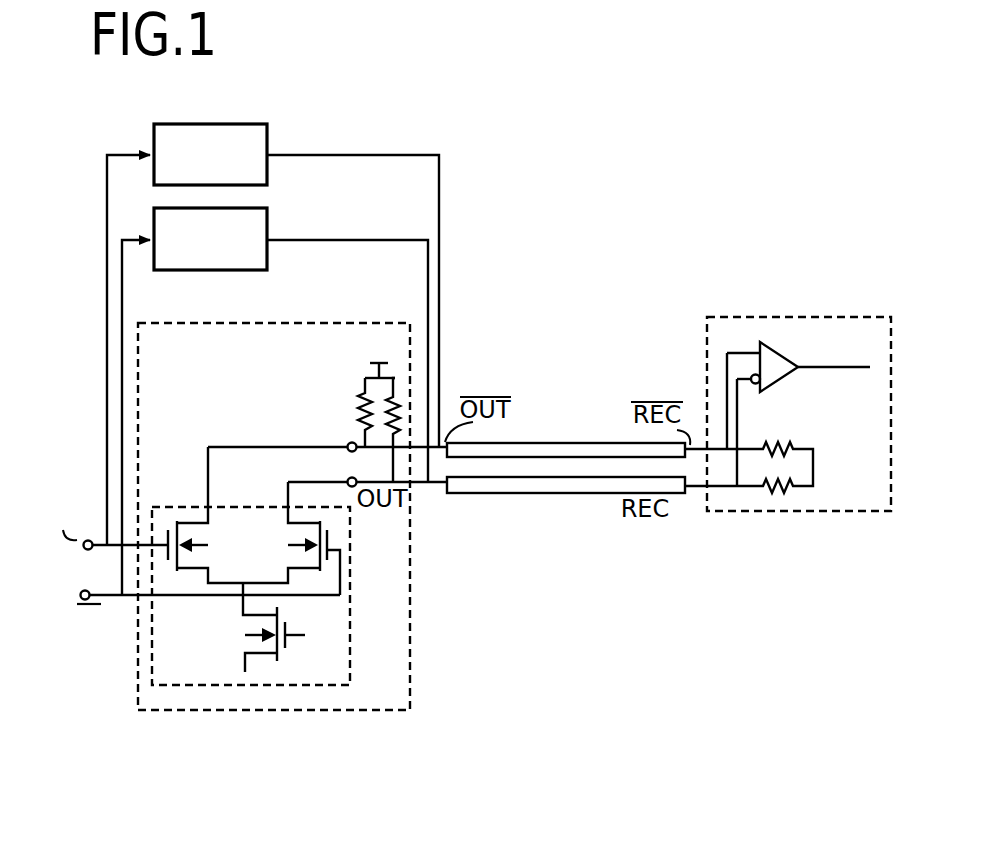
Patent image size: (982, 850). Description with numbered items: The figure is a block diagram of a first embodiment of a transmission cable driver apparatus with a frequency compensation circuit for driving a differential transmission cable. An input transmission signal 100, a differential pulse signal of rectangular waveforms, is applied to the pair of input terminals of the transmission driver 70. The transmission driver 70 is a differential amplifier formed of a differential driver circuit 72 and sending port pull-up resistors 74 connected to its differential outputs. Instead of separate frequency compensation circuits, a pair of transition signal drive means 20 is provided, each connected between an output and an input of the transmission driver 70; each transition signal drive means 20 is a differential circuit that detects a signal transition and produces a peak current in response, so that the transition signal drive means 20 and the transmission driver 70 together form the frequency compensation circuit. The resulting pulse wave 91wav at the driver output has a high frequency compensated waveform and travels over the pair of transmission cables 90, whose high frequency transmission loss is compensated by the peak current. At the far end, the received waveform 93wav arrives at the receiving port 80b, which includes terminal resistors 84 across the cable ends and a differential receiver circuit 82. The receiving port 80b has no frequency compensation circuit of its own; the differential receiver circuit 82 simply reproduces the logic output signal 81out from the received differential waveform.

The transition signal drive means 20 is at (210, 197).
The transmission driver 70 is at (415, 695).
The differential driver circuit 72 is at (353, 612).
The sending port pull-up resistors 74 is at (392, 405).
The input transmission signal 100 is at (77, 592).
The transmission cables 90 is at (520, 447).
The pulse wave 91wav is at (447, 458).
The received waveform 93wav is at (695, 458).
The receiving port 80b is at (788, 433).
The differential receiver circuit 82 is at (779, 348).
The terminal resistors 84 is at (787, 459).
The output signal 81out is at (831, 368).